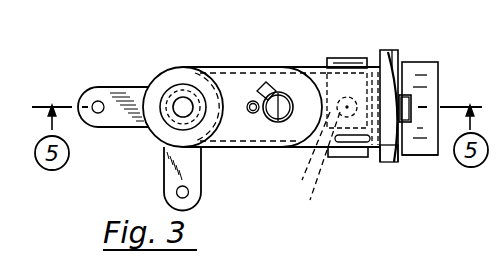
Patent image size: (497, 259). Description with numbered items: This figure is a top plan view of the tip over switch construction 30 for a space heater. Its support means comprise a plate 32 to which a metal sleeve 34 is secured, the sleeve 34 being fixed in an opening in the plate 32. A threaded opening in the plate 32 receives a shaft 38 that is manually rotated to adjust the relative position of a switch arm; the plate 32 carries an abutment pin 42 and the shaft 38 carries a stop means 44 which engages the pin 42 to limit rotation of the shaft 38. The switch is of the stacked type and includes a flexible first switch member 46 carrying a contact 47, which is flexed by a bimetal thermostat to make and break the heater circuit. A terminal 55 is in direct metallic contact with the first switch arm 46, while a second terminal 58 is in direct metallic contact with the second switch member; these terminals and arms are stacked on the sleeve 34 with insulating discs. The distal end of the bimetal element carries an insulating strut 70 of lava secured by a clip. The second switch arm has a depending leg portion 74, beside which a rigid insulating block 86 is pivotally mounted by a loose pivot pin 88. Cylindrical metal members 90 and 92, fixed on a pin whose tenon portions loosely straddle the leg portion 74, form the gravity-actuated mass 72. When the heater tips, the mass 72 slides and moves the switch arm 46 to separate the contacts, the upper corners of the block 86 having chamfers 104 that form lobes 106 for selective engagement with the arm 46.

The switch construction 30 is at (188, 60).
The plate 32 is at (300, 146).
The sleeve 34 is at (181, 100).
The shaft 38 is at (295, 63).
The abutment pin 42 is at (248, 102).
The stop means 44 is at (258, 90).
The first switch member 46 is at (306, 66).
The contact 47 is at (305, 172).
The terminal 55 is at (87, 88).
The terminal 58 is at (164, 192).
The strut 70 is at (306, 197).
The gravity-actuated mass 72 is at (414, 166).
The depending leg portion 74 is at (378, 66).
The insulating block 86 is at (386, 163).
The pivot pin 88 is at (411, 100).
The cylindrical member 90 is at (347, 58).
The cylindrical member 92 is at (424, 62).
The chamfers 104 is at (393, 57).
The lobes 106 is at (400, 50).